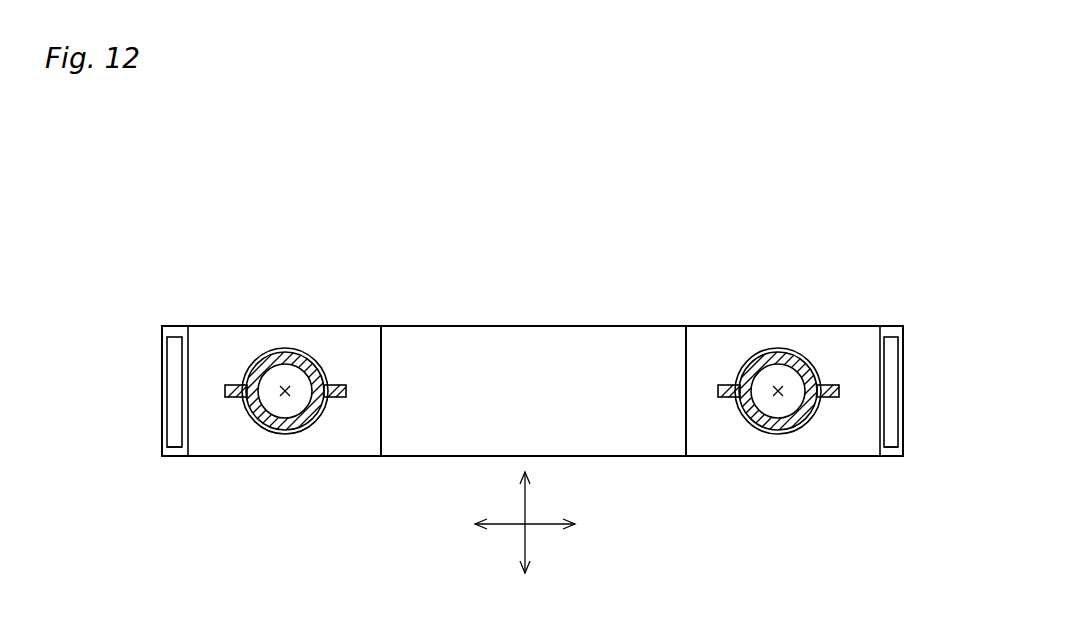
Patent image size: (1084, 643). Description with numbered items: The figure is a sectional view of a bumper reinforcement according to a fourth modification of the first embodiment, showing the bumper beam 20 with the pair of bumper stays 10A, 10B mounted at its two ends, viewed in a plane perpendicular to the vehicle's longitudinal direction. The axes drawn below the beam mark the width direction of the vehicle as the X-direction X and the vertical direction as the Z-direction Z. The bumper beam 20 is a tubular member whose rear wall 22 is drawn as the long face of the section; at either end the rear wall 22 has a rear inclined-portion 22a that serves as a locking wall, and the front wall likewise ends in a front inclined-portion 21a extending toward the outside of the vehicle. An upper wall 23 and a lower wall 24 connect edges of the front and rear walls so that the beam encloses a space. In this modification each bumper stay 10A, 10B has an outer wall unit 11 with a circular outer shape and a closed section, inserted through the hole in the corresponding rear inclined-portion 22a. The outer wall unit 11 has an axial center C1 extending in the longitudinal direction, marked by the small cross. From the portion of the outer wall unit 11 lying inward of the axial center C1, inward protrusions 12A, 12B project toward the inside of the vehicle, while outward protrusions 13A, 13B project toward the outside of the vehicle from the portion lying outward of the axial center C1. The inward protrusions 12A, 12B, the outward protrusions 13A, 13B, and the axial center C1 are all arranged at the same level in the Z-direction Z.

The bumper beam 20 is at (468, 317).
The rear wall 22 is at (520, 333).
The rear inclined-portion 22a is at (313, 331).
The front inclined-portion 21a is at (163, 391).
The upper wall 23 is at (173, 331).
The lower wall 24 is at (176, 449).
The bumper stay 10A is at (257, 343).
The bumper stay 10B is at (812, 343).
The outer wall unit 11 is at (284, 431).
The axial center C1 is at (285, 388).
The inward protrusion 12A is at (330, 385).
The outward protrusion 13A is at (240, 386).
The inward protrusion 12B is at (736, 385).
The outward protrusion 13B is at (834, 386).
The Z-direction Z is at (525, 505).
The X-direction X is at (540, 524).